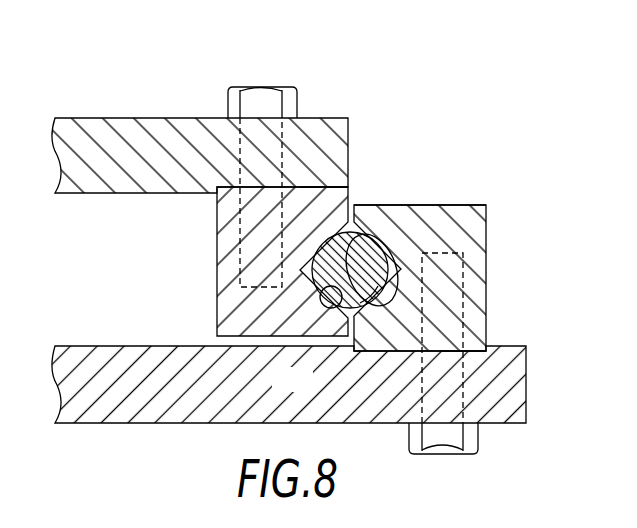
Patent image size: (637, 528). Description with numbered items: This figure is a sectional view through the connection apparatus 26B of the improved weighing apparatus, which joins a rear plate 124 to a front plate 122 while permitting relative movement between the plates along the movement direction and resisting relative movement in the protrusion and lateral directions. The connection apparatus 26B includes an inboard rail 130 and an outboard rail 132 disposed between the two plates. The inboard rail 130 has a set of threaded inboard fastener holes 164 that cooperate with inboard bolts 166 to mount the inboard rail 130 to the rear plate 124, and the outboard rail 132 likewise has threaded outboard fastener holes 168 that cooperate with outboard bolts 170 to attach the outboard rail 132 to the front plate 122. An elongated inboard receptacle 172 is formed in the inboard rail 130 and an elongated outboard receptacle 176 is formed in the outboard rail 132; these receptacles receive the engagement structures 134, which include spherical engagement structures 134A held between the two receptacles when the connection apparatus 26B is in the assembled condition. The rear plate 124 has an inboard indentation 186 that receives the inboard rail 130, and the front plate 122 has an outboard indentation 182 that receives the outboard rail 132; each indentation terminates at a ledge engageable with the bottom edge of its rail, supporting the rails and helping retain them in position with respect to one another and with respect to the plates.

The rear plate 124 is at (99, 118).
The front plate 122 is at (119, 423).
The inboard rail 130 is at (217, 288).
The outboard rail 132 is at (487, 219).
The connection apparatus 26B is at (428, 204).
The outboard indentation 182 is at (487, 350).
The inboard indentation 186 is at (325, 190).
The inboard bolt 166 is at (262, 87).
The inboard fastener hole 164 is at (282, 232).
The outboard bolt 170 is at (479, 438).
The outboard fastener hole 168 is at (430, 282).
The engagement structure 134 is at (350, 234).
The spherical engagement structure 134A is at (393, 270).
The outboard receptacle 176 is at (371, 308).
The inboard receptacle 172 is at (327, 307).